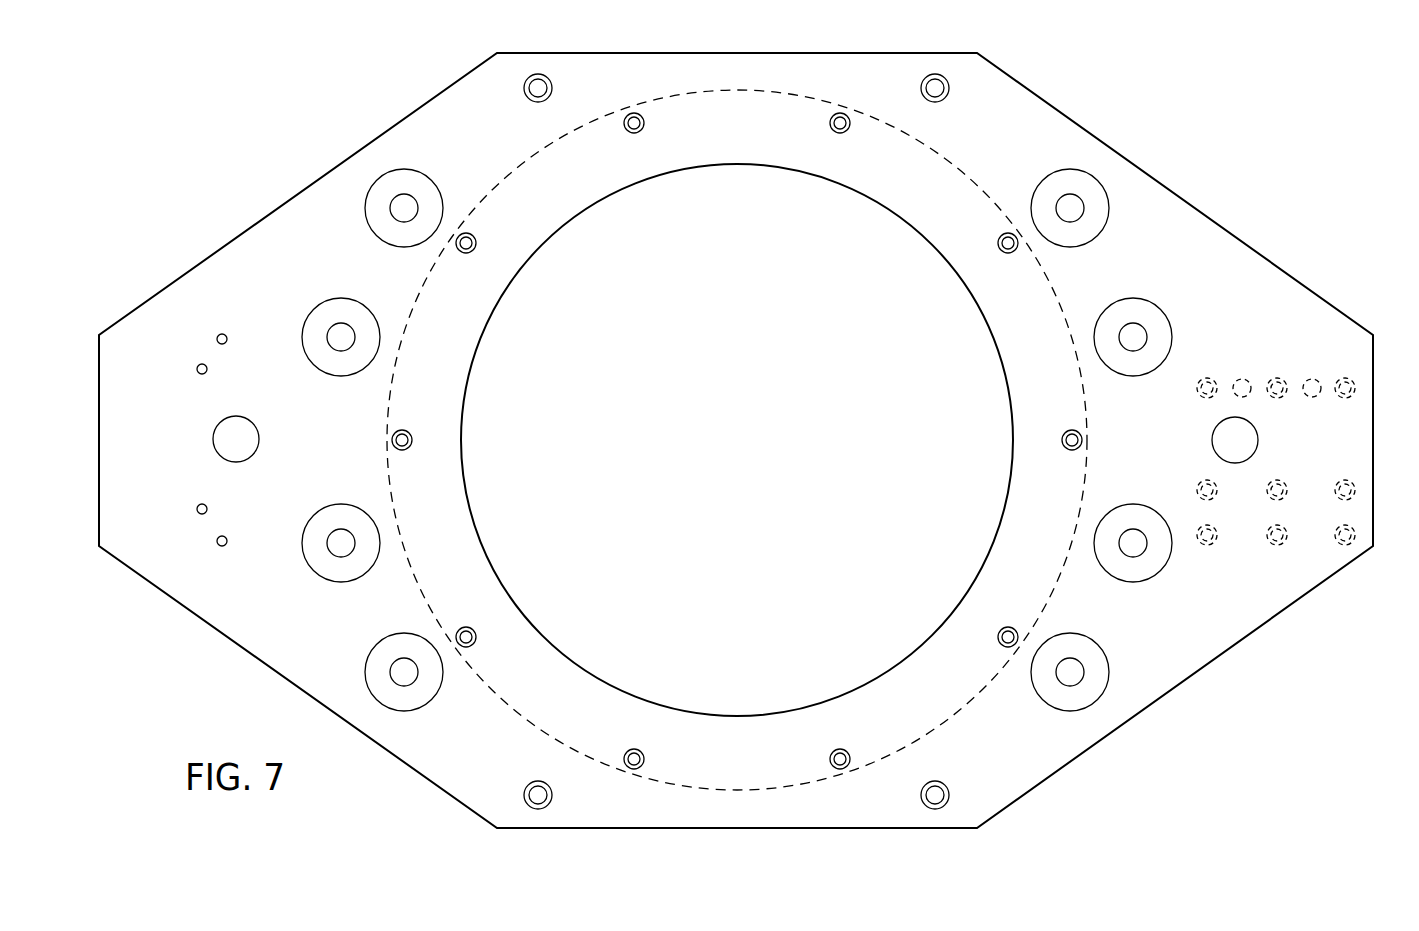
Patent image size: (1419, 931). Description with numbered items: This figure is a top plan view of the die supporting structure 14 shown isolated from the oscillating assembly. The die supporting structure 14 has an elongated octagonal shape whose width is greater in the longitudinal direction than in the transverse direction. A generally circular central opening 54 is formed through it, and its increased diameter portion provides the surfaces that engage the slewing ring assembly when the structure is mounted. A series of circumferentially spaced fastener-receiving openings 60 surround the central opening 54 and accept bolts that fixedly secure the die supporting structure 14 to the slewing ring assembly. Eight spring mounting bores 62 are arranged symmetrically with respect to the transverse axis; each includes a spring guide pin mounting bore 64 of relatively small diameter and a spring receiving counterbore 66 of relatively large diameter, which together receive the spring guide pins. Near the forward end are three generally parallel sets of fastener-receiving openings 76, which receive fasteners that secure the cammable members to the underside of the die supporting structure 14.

The die supporting structure 14 is at (1254, 153).
The central opening 54 is at (872, 630).
The fastener-receiving openings 60 is at (644, 124).
The spring mounting bores 62 is at (1086, 247).
The spring guide pin mounting bore 64 is at (1073, 210).
The spring receiving counterbore 66 is at (737, 453).
The fastener-receiving openings 76 is at (1340, 378).